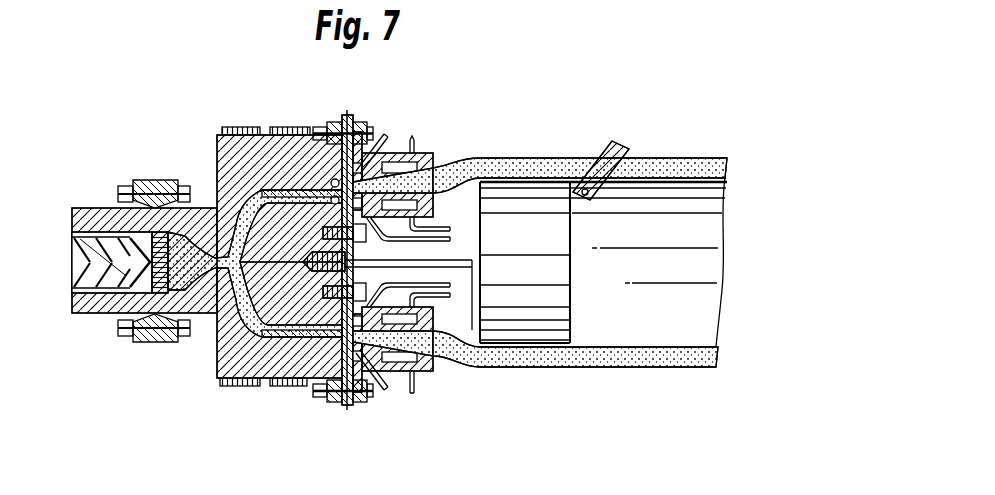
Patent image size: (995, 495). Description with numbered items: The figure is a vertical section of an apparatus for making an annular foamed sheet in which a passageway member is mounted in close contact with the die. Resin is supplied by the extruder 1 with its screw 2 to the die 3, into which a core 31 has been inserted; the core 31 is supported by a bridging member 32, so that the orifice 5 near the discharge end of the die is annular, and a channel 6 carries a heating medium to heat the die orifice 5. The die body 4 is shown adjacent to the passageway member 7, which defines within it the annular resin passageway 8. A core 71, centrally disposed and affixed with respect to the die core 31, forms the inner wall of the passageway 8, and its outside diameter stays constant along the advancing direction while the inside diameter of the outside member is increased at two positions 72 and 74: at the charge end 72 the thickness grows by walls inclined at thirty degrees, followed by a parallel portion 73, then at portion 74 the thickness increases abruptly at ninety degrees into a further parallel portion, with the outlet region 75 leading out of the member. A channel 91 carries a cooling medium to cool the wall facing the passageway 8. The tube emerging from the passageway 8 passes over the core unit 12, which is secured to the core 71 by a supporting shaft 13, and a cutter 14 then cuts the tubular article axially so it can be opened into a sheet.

The extruder 1 is at (149, 312).
The screw 2 is at (76, 315).
The die 3 is at (228, 352).
The core 31 is at (238, 380).
The bridging member 32 is at (278, 147).
The upper body half 4 is at (204, 246).
The die orifice 5 is at (302, 148).
The channel 6 is at (313, 370).
The passageway member 7 is at (357, 405).
The core 71 is at (431, 371).
The charge end 72 is at (364, 120).
The parallel portion 73 is at (432, 198).
The portion 74 is at (397, 150).
The upper pipe wall 75 is at (440, 162).
The resin passageway 8 is at (400, 184).
The channel for cooling medium 91 is at (408, 388).
The core unit 12 is at (521, 188).
The supporting shaft 13 is at (478, 358).
The cutter 14 is at (619, 148).